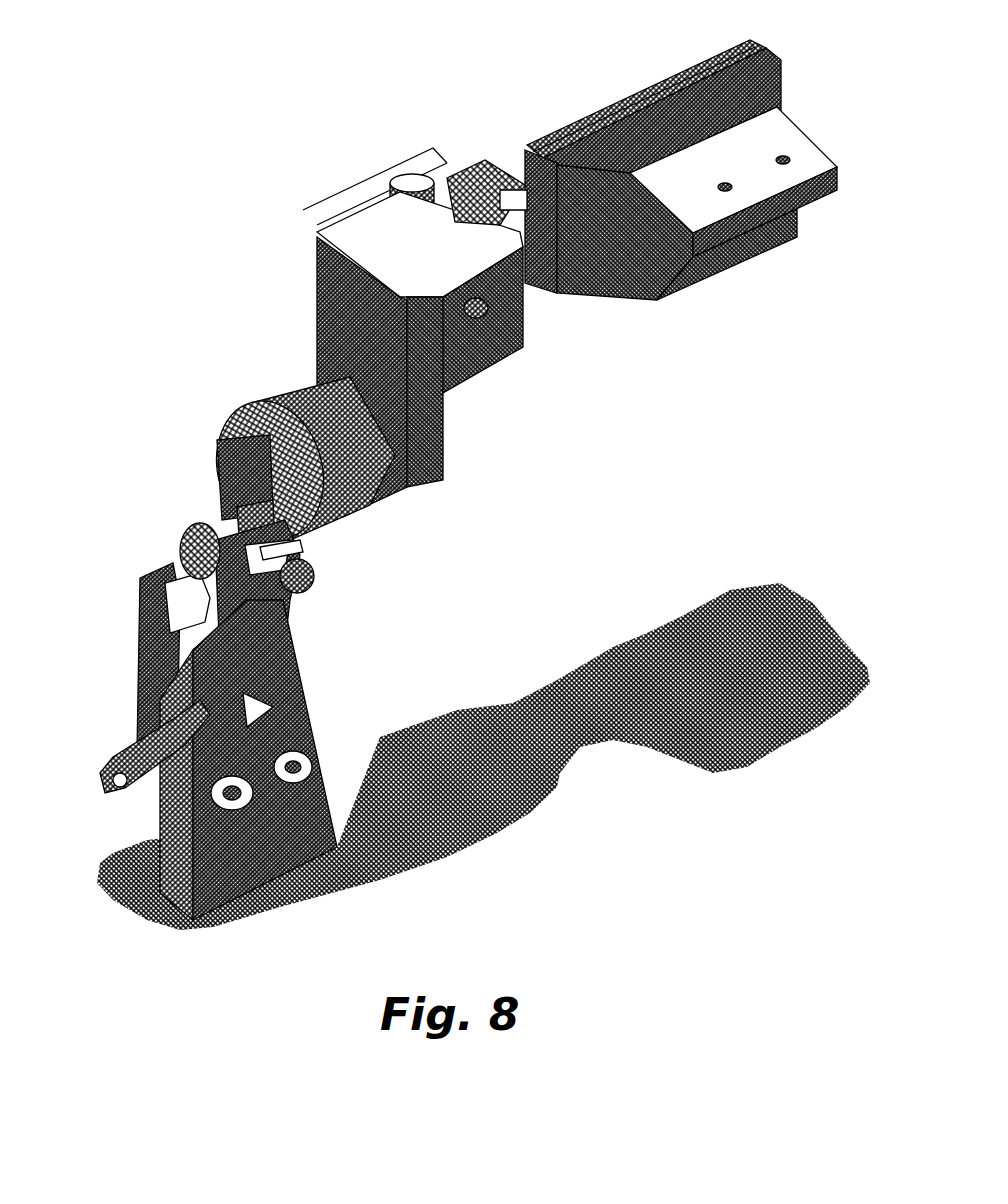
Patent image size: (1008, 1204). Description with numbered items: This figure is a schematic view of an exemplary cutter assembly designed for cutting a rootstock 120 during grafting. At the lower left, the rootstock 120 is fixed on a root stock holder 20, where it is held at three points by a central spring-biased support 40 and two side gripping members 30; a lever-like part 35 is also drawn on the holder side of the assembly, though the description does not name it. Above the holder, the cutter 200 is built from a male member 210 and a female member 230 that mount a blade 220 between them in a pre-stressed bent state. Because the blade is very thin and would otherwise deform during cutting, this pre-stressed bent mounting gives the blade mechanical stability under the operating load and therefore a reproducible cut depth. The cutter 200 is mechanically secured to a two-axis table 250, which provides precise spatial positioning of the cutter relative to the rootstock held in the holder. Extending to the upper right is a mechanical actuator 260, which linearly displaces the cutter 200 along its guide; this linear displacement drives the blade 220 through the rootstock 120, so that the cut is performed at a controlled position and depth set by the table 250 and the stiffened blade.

The root stock holder 20 is at (313, 700).
The side gripping members 30 is at (150, 562).
The left clamp arm 35 is at (137, 677).
The central spring-biased support 40 is at (293, 613).
The root stock 120 is at (155, 800).
The cutter 200 is at (277, 557).
The male member 210 is at (320, 393).
The blade 220 is at (213, 473).
The female member 230 is at (257, 423).
The two-axis table 250 is at (393, 177).
The mechanical actuator 260 is at (612, 107).